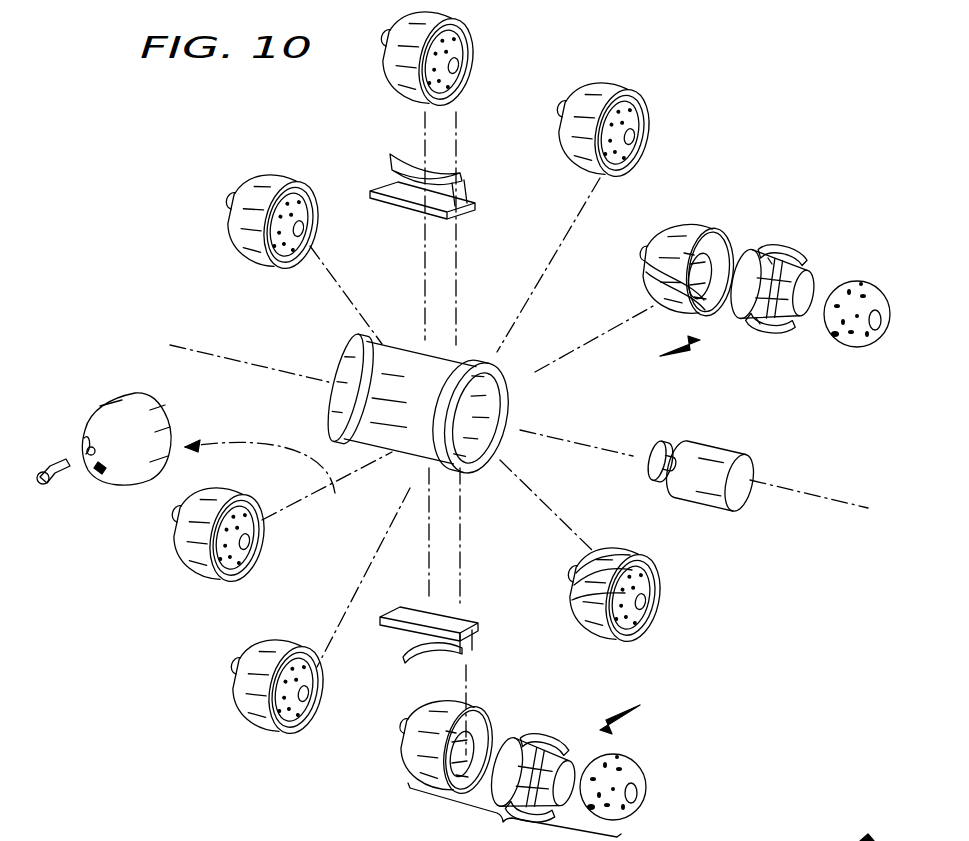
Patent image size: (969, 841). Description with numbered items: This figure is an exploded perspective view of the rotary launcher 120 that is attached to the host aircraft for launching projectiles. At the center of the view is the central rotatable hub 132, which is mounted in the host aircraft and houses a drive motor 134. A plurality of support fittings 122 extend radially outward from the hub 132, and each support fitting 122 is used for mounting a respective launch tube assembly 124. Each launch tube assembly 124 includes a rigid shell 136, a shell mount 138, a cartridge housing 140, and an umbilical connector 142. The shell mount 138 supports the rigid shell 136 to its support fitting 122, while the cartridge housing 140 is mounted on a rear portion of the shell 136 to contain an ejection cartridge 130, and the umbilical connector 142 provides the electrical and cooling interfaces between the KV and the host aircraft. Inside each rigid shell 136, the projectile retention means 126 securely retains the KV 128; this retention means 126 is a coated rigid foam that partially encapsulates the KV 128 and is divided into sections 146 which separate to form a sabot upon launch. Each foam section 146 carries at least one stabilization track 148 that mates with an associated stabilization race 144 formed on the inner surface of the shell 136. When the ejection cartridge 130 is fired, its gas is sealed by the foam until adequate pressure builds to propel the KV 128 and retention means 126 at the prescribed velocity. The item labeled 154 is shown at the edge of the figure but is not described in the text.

The rotary launcher 120 is at (461, 377).
The support fitting 122 is at (468, 188).
The launch tube assembly 124 is at (514, 812).
The projectile retention means 126 is at (625, 440).
The KV 128 is at (872, 346).
The ejection cartridge 130 is at (555, 112).
The central rotatable hub 132 is at (433, 364).
The drive motor 134 is at (736, 450).
The rigid shell 136 is at (645, 125).
The shell mount 138 is at (628, 562).
The cartridge housing 140 is at (90, 440).
The umbilical connector 142 is at (106, 472).
The stabilization race 144 is at (712, 250).
The foam section 146 is at (800, 262).
The stabilization track 148 is at (770, 262).
The base 154 is at (802, 840).